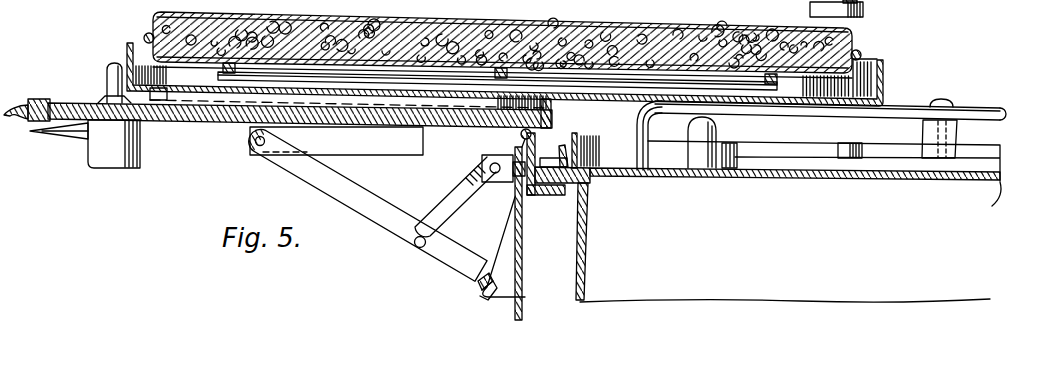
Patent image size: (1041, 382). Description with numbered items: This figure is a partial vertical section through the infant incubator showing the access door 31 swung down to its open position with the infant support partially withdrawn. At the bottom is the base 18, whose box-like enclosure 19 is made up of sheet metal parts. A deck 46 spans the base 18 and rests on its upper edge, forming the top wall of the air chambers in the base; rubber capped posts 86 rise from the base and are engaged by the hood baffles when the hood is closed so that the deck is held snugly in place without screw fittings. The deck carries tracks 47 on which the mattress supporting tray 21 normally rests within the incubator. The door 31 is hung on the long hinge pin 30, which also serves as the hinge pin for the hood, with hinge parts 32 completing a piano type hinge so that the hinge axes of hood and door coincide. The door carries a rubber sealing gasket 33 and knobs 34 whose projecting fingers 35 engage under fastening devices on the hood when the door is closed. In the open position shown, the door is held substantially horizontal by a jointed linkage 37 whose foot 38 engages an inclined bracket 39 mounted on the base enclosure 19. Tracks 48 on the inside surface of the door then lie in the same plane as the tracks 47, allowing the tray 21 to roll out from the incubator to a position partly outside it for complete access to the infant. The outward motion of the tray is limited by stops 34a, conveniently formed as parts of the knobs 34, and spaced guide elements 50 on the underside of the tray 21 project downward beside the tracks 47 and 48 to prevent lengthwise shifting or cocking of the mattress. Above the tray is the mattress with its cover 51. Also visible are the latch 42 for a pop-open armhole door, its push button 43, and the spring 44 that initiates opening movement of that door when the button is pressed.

The base 18 is at (657, 288).
The base enclosure 19 is at (514, 312).
The mattress supporting tray 21 is at (885, 67).
The hinge pin 30 is at (470, 153).
The access door 31 is at (173, 122).
The hinge parts 32 is at (490, 127).
The sealing gasket 33 is at (33, 99).
The knobs 34 is at (102, 163).
The stops 34a is at (112, 68).
The projecting fingers 35 is at (60, 143).
The jointed linkage 37 is at (382, 228).
The foot 38 is at (477, 272).
The bracket 39 is at (502, 250).
The latches 42 is at (497, 45).
The push buttons 43 is at (864, 10).
The spring 44 is at (502, 42).
The deck 46 is at (750, 168).
The tracks 47 is at (910, 107).
The tracks 48 is at (230, 95).
The guide elements 50 is at (583, 104).
The pad cover 51 is at (230, 13).
The posts 86 is at (695, 170).